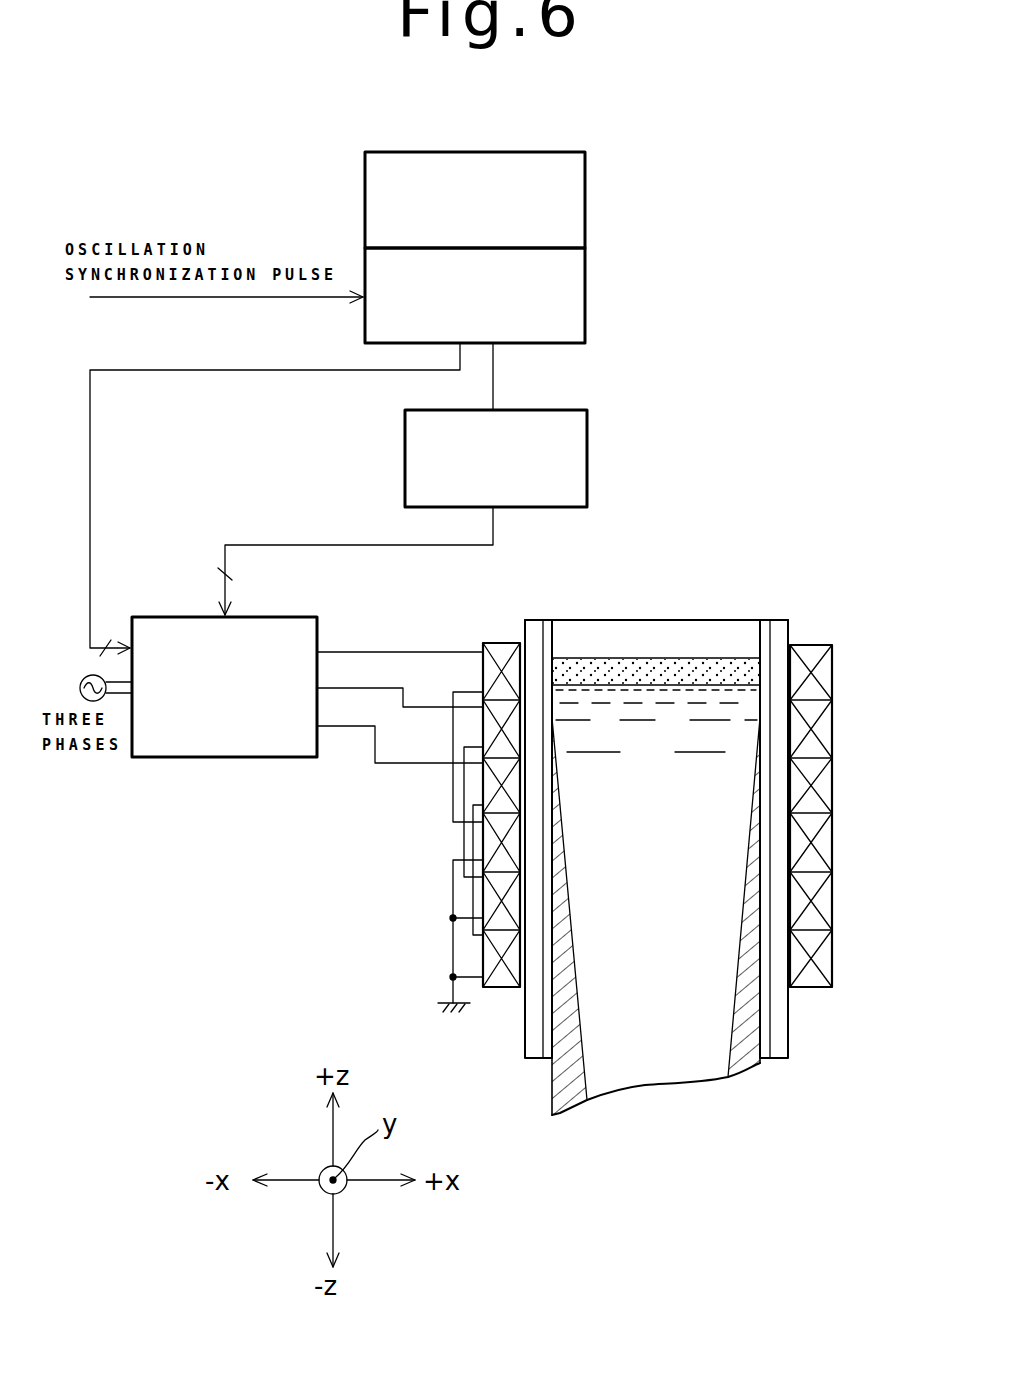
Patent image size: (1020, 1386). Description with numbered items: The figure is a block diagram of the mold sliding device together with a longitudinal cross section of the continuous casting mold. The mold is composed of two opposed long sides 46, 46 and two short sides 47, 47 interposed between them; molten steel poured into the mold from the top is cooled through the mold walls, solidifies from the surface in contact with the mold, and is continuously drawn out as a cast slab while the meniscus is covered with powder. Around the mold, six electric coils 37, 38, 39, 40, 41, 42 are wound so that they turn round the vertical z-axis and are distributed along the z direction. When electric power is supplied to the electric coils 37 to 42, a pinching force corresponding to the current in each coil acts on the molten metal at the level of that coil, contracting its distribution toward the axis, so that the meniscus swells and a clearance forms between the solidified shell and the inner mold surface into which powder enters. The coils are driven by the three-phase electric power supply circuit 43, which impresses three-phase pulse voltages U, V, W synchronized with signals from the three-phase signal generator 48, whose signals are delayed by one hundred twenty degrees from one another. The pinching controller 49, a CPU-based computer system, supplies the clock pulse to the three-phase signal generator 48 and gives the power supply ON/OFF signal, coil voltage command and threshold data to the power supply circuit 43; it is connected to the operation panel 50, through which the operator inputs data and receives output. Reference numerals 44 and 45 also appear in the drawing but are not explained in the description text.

The electric coil 37 is at (483, 670).
The electric coil 38 is at (483, 728).
The electric coil 39 is at (483, 780).
The electric coil 40 is at (483, 840).
The electric coil 41 is at (483, 893).
The electric coil 42 is at (483, 947).
The three-phase electric power supply circuit 43 is at (190, 615).
The control signal line 44 is at (355, 561).
The mold wall 45 is at (546, 1047).
The long side 46 is at (516, 620).
The short side 47 is at (661, 618).
The three-phase signal generator 48 is at (405, 438).
The pinching controller 49 is at (585, 296).
The operation panel 50 is at (585, 199).